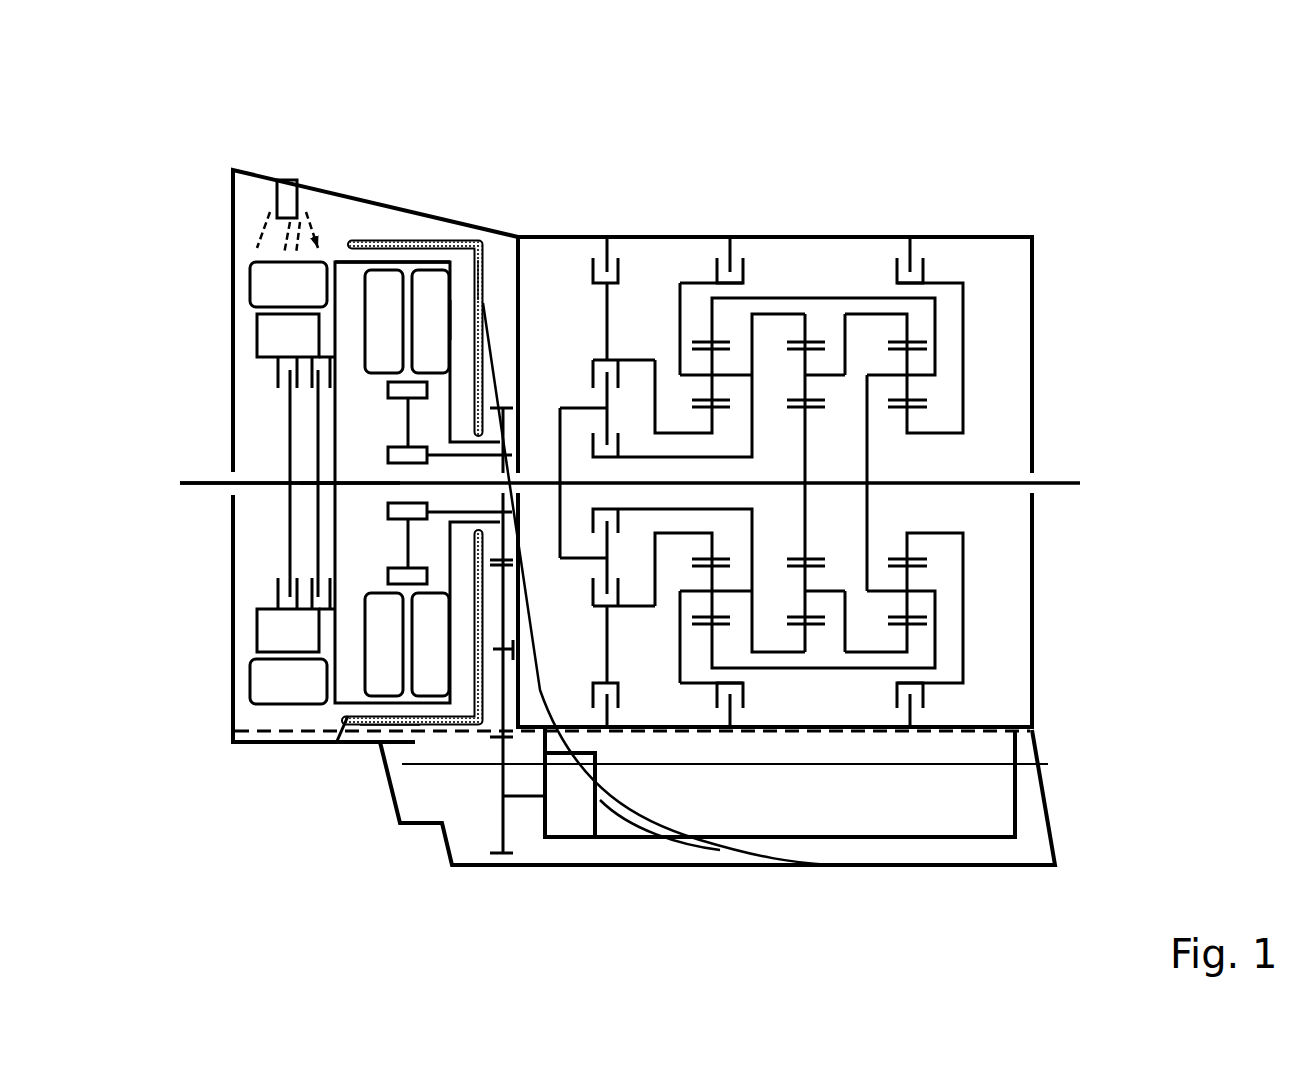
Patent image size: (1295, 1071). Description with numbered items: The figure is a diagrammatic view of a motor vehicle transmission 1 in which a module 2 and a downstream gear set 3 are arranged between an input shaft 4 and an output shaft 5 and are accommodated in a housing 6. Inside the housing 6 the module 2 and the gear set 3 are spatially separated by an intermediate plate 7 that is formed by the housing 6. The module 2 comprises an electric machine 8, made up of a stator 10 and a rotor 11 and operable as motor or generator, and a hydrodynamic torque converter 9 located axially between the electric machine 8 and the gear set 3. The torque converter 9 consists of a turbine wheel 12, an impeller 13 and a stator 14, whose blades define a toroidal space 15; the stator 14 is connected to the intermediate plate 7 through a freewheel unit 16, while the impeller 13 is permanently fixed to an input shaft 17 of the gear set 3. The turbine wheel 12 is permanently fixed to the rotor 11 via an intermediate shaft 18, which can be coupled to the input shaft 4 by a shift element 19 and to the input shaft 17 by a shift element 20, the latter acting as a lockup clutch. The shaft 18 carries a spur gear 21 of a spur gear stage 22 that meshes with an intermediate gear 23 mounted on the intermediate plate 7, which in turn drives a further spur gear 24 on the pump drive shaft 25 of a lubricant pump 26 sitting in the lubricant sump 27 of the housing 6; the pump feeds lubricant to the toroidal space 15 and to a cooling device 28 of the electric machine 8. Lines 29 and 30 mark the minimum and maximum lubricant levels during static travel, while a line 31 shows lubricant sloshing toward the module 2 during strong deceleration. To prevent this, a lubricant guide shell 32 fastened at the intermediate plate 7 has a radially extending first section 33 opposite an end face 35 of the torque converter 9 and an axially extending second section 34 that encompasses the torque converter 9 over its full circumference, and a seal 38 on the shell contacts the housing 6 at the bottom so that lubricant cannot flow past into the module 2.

The transmission 1 is at (1062, 156).
The module 2 is at (392, 158).
The gear set 3 is at (864, 174).
The input shaft 4 is at (207, 484).
The output shaft 5 is at (1067, 483).
The housing 6 is at (763, 236).
The intermediate plate 7 is at (483, 303).
The electric machine 8 is at (226, 297).
The hydrodynamic torque converter 9 is at (383, 287).
The stator 10 is at (277, 285).
The rotor 11 is at (275, 333).
The turbine wheel 12 is at (481, 246).
The impeller 13 is at (408, 283).
The stator 14 is at (402, 392).
The toroidal space 15 is at (432, 283).
The freewheel unit 16 is at (405, 425).
The input shaft 17 is at (350, 486).
The intermediate shaft 18 is at (356, 265).
The shift element 19 is at (266, 372).
The shift element 20 is at (308, 394).
The spur gear 21 is at (492, 418).
The spur gear stage 22 is at (503, 878).
The intermediate gear 23 is at (500, 722).
The spur gear 24 is at (502, 798).
The pump drive shaft 25 is at (523, 798).
The lubricant pump 26 is at (570, 810).
The lubricant sump 27 is at (1005, 852).
The cooling device 28 is at (287, 202).
The line 29 is at (940, 765).
The line 30 is at (253, 732).
The line 31 is at (640, 821).
The lubricant guide shell 32 is at (361, 739).
The first section 33 is at (488, 290).
The second section 34 is at (432, 729).
The end face 35 is at (456, 317).
The seal 38 is at (335, 731).